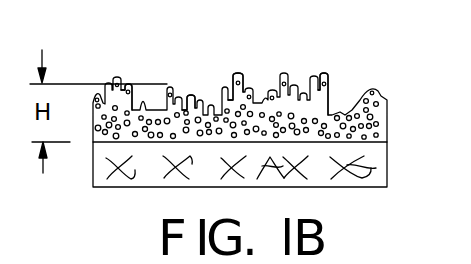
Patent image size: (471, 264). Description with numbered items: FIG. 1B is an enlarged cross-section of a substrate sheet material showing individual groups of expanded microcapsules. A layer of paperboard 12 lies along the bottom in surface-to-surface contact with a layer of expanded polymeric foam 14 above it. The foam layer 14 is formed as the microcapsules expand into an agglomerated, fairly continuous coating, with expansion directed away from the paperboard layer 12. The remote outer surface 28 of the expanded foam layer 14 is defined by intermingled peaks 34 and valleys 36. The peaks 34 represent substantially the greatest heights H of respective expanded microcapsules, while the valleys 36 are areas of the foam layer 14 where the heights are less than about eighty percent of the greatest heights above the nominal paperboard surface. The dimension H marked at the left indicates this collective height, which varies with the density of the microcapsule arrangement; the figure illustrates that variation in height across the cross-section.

The paperboard layer 12 is at (387, 167).
The expanded polymeric foam layer 14 is at (387, 121).
The remote outer surface 28 is at (254, 74).
The peaks 34 is at (131, 83).
The valleys 36 is at (191, 95).